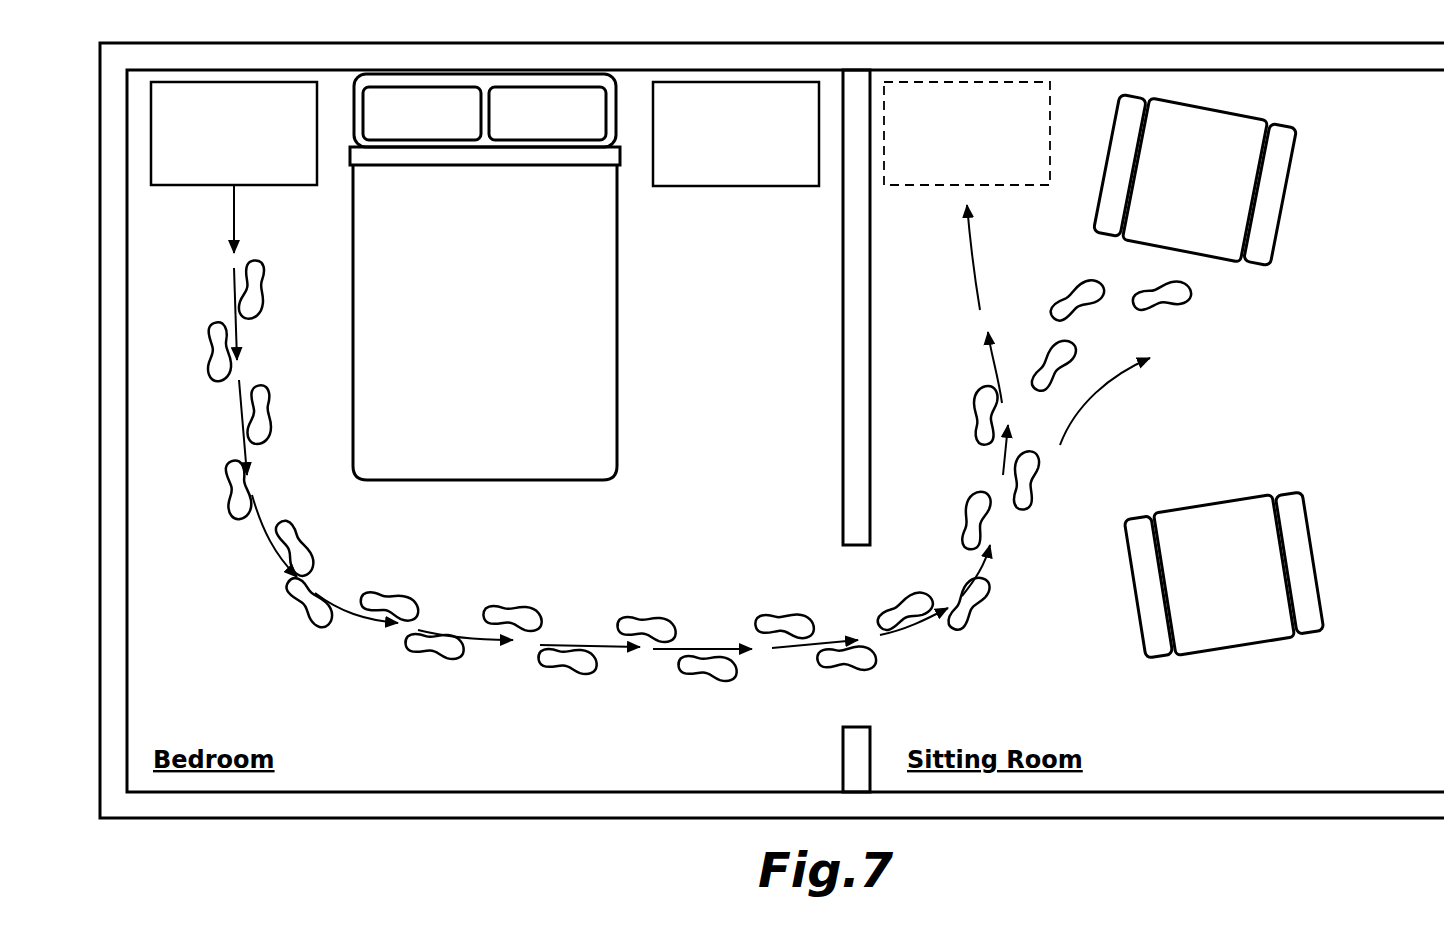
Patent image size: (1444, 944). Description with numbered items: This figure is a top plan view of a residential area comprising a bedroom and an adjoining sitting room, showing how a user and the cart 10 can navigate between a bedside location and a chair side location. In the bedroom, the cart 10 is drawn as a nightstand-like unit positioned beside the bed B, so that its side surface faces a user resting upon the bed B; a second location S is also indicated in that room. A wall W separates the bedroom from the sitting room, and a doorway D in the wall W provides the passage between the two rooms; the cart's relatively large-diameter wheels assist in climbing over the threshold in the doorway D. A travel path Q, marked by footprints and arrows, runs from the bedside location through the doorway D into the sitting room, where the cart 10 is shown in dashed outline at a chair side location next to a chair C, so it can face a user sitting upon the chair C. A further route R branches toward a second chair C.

The cart 10 is at (1050, 108).
The bed B is at (485, 277).
The second location S is at (736, 134).
The chair C is at (1208, 376).
The wall W is at (848, 404).
The doorway D is at (845, 703).
The path of travel Q is at (233, 222).
The alternate route R is at (1097, 392).